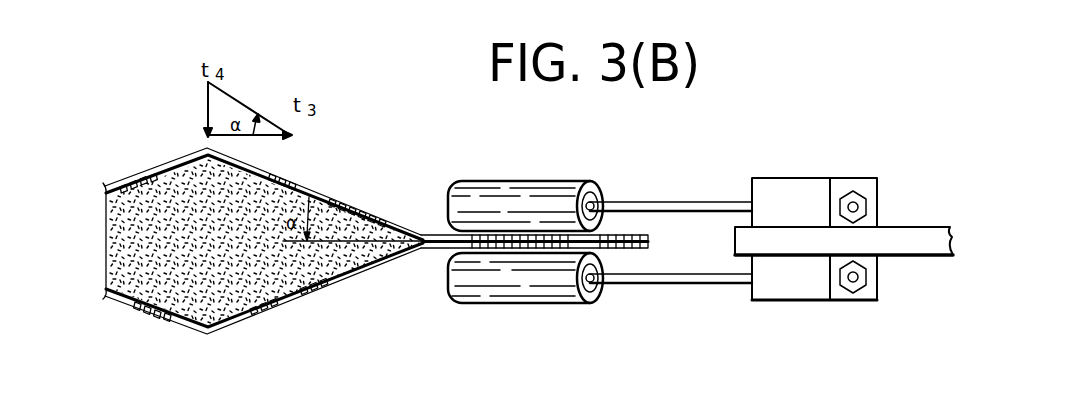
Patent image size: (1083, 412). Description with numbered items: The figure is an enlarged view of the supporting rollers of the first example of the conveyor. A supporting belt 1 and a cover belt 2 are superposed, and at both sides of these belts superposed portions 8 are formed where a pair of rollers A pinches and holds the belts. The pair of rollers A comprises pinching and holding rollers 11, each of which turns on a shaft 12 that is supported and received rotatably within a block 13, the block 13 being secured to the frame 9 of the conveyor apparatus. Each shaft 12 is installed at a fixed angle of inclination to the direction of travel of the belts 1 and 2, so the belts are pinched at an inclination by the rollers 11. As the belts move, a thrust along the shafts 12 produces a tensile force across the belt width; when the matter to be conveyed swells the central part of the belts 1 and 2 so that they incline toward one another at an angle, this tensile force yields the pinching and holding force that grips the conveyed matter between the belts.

The supporting belt 1 is at (290, 305).
The cover belt 2 is at (309, 191).
The superposed portions 8 is at (434, 265).
The frame 9 is at (936, 233).
The pinching and holding rollers 11 is at (516, 186).
The shaft 12 is at (656, 201).
The block 13 is at (877, 183).
The pairs of rollers A is at (706, 192).